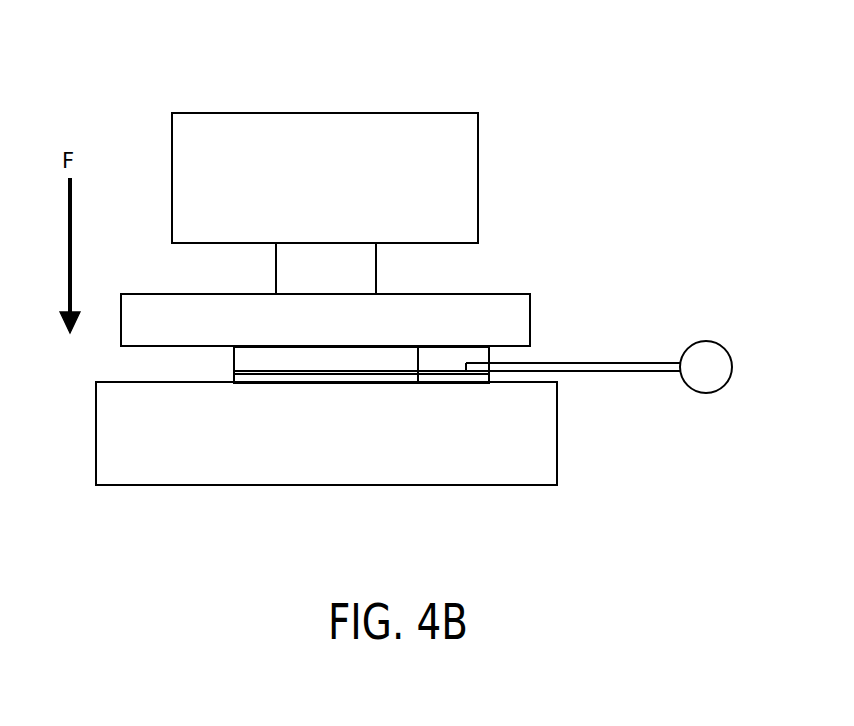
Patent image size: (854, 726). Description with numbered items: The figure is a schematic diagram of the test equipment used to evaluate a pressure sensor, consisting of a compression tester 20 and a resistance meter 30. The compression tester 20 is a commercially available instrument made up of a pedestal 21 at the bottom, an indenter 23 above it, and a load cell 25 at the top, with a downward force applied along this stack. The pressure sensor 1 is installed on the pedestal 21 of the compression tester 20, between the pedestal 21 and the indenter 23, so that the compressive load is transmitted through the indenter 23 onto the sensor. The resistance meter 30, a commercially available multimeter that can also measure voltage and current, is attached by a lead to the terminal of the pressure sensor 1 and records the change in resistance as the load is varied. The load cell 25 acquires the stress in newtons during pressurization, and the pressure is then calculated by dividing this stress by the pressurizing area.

The compression tester 20 is at (486, 84).
The load cell 25 is at (198, 118).
The indenter 23 is at (503, 300).
The electronic component 1 is at (232, 365).
The resistance meter 30 is at (696, 326).
The pedestal 21 is at (301, 478).